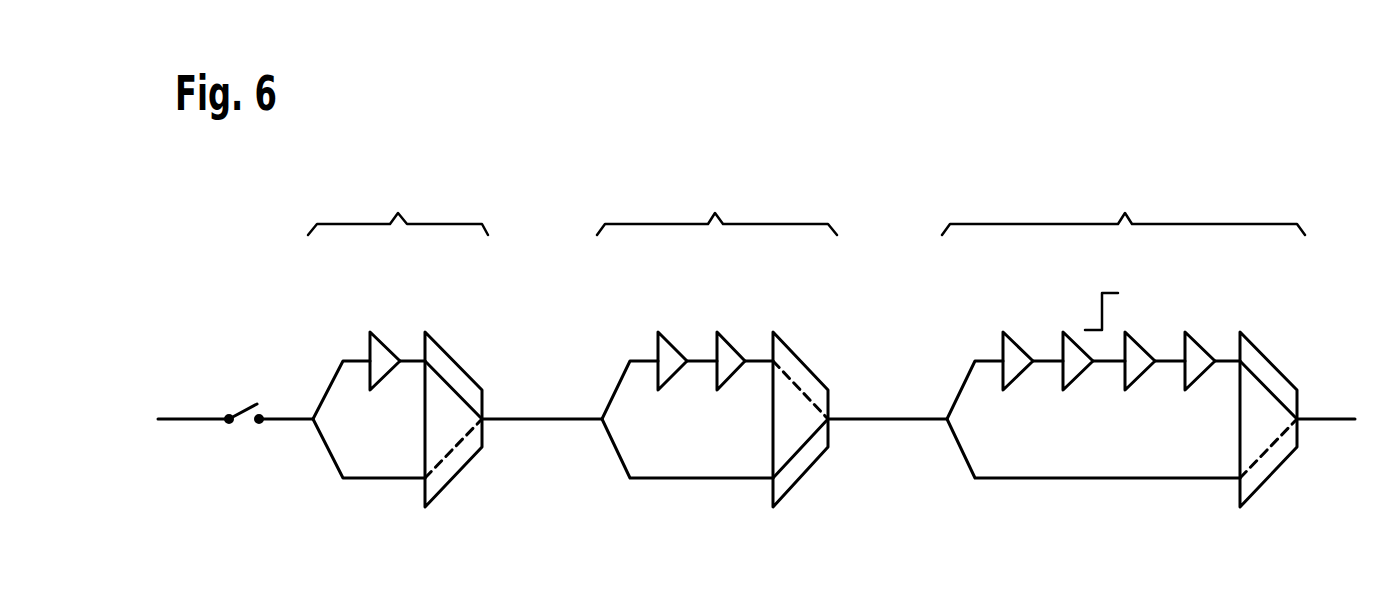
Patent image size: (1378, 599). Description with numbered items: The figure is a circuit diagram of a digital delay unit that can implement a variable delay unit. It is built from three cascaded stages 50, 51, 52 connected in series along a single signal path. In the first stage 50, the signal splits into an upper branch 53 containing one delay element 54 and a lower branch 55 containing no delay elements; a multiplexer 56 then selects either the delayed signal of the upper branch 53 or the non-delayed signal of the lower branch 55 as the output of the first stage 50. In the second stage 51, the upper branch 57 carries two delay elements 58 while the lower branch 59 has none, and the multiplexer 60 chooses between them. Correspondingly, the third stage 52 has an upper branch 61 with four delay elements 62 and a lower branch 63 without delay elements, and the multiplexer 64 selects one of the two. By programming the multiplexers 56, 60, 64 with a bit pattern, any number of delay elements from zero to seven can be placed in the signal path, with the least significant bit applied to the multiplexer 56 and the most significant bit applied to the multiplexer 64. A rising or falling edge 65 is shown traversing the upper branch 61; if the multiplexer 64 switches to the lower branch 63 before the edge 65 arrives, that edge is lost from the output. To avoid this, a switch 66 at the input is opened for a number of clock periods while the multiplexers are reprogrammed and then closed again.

The first stage 50 is at (398, 213).
The second stage 51 is at (715, 213).
The third stage 52 is at (1125, 213).
The upper branch 53 is at (328, 387).
The delay element 54 is at (380, 355).
The lower branch 55 is at (328, 448).
The multiplexer 56 is at (457, 475).
The upper branch 57 is at (615, 387).
The delay elements 58 is at (727, 355).
The lower branch 59 is at (618, 460).
The multiplexer 60 is at (797, 478).
The upper branch 61 is at (962, 387).
The delay elements 62 is at (1073, 352).
The lower branch 63 is at (962, 450).
The multiplexer 64 is at (1268, 480).
The edge 65 is at (1090, 310).
The switch 66 is at (250, 405).